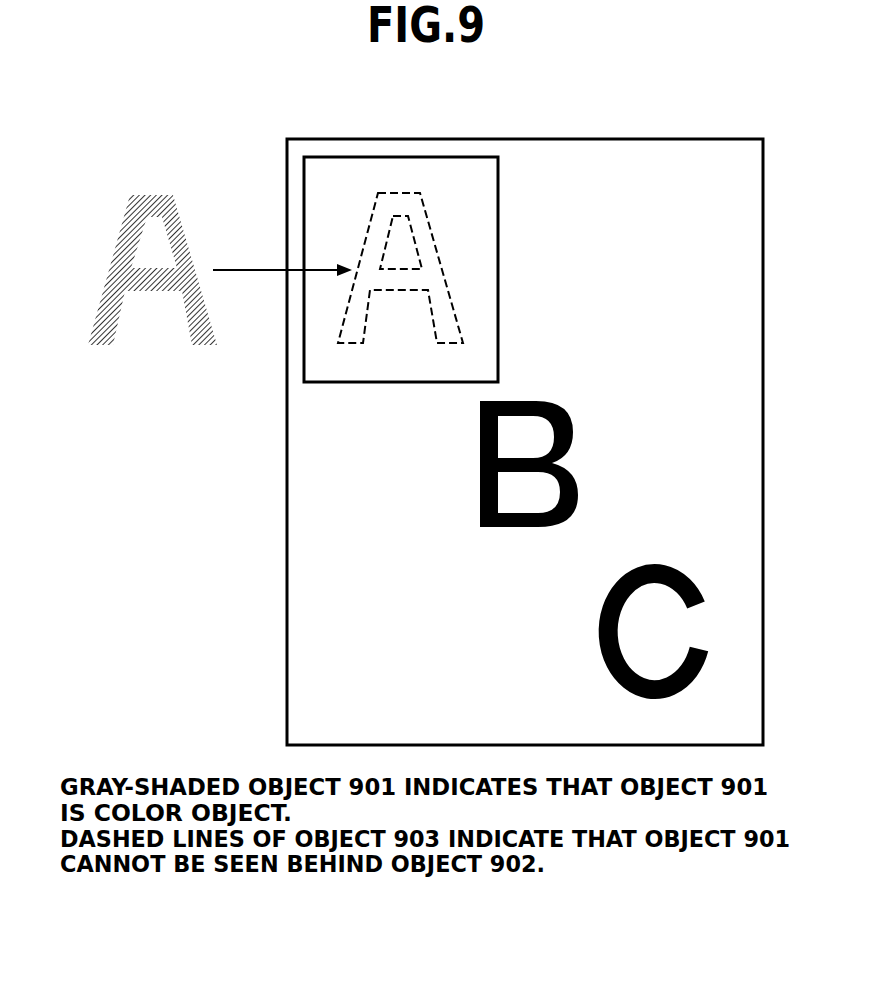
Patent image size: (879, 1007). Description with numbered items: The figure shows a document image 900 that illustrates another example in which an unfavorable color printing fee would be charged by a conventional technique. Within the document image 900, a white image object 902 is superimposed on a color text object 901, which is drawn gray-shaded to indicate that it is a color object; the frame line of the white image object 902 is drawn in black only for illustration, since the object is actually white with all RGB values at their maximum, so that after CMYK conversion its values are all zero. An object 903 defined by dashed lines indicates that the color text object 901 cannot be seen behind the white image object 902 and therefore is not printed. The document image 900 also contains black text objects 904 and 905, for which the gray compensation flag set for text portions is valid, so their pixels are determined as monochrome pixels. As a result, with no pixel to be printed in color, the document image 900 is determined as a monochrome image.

The document image 900 is at (540, 139).
The color text object 901 is at (155, 196).
The white image object 902 is at (498, 245).
The object defined by dashed lines 903 is at (425, 215).
The black text object 904 is at (540, 401).
The black text object 905 is at (660, 558).